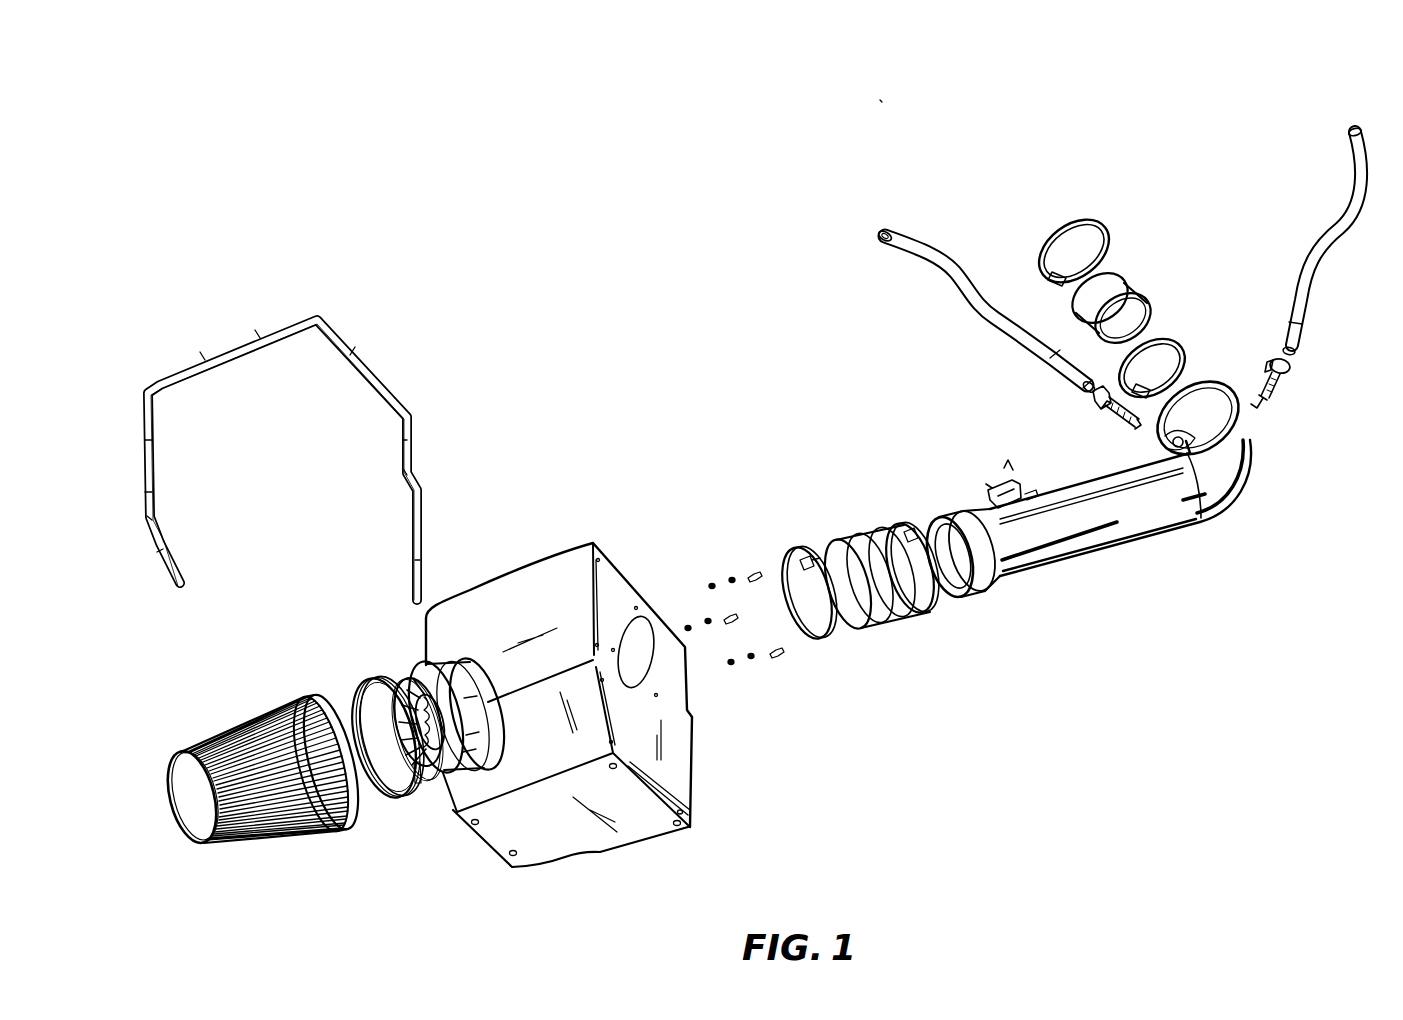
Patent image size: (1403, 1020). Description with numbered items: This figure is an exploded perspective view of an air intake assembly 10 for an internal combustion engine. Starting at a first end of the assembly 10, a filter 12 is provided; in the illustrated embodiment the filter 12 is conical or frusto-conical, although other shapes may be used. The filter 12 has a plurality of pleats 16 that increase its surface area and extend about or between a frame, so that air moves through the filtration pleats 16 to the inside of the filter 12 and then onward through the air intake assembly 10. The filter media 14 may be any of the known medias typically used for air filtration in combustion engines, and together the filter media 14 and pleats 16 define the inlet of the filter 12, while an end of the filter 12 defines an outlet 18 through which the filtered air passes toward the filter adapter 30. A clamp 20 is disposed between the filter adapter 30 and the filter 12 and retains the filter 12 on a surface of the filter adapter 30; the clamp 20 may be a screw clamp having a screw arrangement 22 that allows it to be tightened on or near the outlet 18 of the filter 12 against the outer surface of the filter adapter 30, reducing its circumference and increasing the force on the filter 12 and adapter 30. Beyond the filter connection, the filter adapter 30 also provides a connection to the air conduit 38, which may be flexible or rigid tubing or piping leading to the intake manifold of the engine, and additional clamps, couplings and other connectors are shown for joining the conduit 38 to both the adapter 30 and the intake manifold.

The air intake assembly 10 is at (876, 100).
The filter 12 is at (174, 847).
The filter media 14 is at (232, 712).
The pleats 16 is at (300, 746).
The outlet 18 is at (327, 684).
The clamp 20 is at (365, 674).
The screw arrangement 22 is at (429, 803).
The filter adapter 30 is at (402, 678).
The air conduit 38 is at (1170, 575).